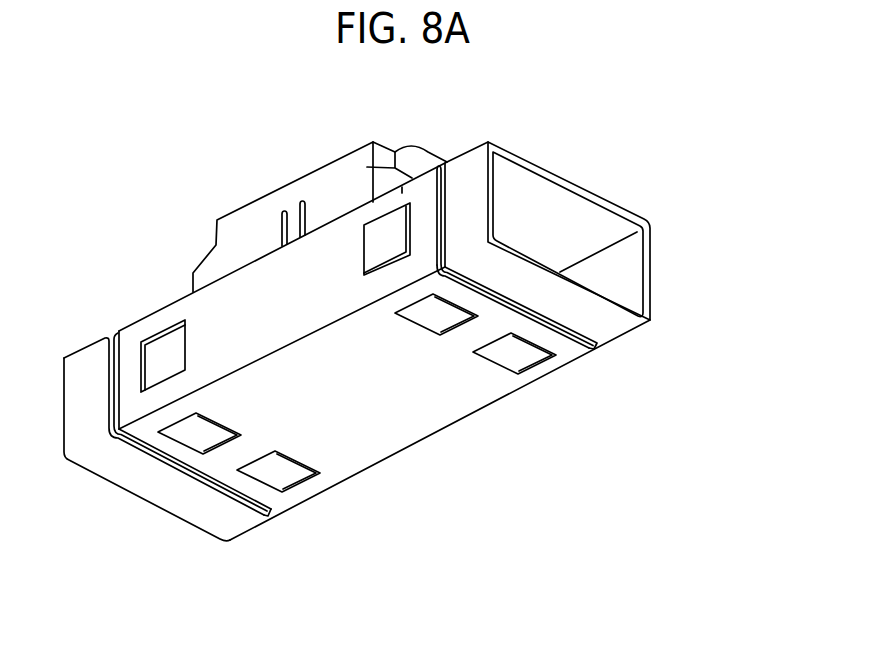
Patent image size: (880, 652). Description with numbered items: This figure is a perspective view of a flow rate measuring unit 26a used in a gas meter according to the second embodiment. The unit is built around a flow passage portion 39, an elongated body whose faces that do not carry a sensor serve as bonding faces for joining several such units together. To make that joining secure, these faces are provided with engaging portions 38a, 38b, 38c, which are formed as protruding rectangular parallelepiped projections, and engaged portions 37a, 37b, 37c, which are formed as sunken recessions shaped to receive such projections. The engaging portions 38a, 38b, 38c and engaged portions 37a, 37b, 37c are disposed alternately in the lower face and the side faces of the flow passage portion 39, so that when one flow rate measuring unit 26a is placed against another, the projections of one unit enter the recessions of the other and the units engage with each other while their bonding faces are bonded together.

The flow rate measuring unit 26a is at (656, 203).
The engaged portion 37a is at (523, 355).
The engaged portion 37b is at (195, 432).
The engaged portion 37c is at (167, 352).
The engaging portion 38a is at (427, 318).
The engaging portion 38b is at (280, 470).
The engaging portion 38c is at (373, 238).
The flow passage portion 39 is at (352, 413).